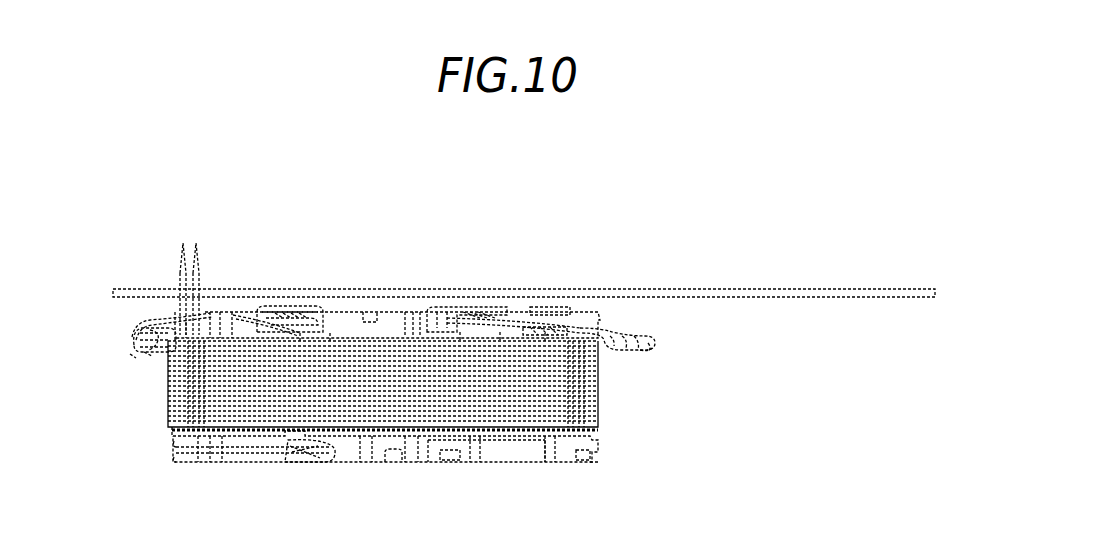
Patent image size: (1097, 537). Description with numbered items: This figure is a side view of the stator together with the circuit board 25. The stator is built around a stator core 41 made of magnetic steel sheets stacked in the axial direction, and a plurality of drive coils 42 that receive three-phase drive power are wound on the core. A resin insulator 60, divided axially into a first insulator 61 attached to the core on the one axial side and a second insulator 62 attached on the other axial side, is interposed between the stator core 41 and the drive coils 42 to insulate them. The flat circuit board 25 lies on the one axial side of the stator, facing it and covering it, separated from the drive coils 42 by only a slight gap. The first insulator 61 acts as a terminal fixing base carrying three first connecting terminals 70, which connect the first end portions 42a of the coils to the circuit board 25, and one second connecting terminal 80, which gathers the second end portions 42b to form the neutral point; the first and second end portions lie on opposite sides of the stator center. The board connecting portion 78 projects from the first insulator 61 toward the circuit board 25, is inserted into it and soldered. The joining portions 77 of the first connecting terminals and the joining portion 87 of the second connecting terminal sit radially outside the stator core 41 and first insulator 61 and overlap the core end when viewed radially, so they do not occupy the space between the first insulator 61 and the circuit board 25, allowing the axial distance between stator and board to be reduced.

The circuit board 25 is at (784, 289).
The stator core 41 is at (602, 403).
The drive coils 42 is at (300, 306).
The first end portion 42a is at (148, 320).
The second end portion 42b is at (610, 322).
The insulator 60 is at (386, 380).
The first insulator 61 is at (358, 312).
The second insulator 62 is at (522, 453).
The first connecting terminals 70 is at (130, 314).
The joining portions 77 is at (148, 364).
The board connecting portion 78 is at (196, 265).
The second connecting terminal 80 is at (650, 333).
The joining portion 87 is at (656, 352).